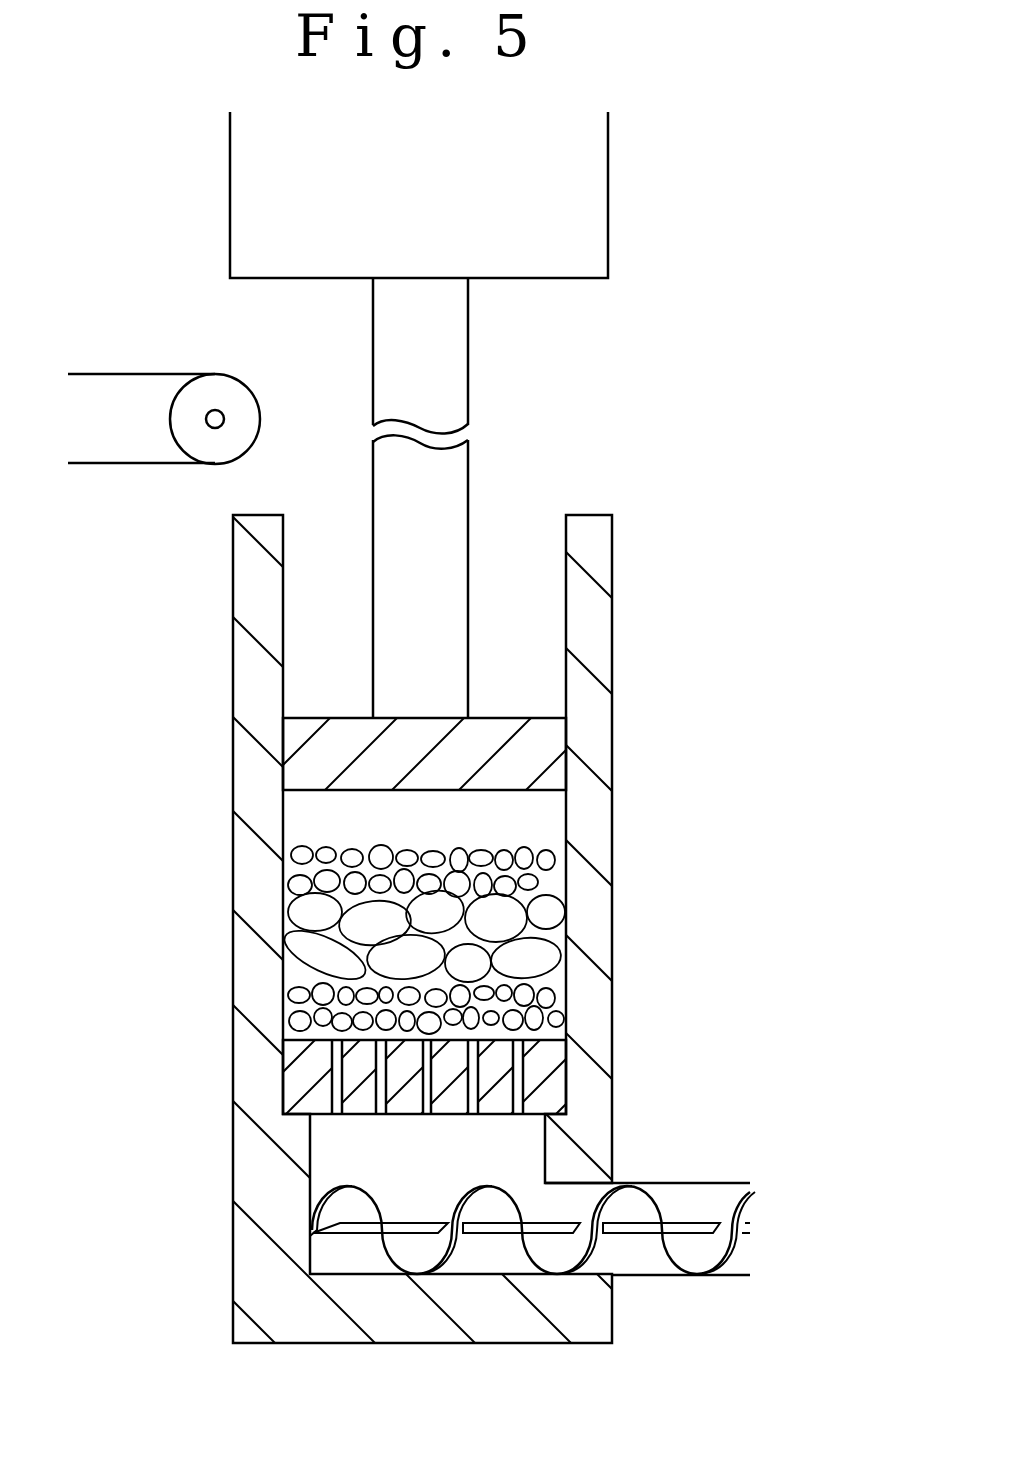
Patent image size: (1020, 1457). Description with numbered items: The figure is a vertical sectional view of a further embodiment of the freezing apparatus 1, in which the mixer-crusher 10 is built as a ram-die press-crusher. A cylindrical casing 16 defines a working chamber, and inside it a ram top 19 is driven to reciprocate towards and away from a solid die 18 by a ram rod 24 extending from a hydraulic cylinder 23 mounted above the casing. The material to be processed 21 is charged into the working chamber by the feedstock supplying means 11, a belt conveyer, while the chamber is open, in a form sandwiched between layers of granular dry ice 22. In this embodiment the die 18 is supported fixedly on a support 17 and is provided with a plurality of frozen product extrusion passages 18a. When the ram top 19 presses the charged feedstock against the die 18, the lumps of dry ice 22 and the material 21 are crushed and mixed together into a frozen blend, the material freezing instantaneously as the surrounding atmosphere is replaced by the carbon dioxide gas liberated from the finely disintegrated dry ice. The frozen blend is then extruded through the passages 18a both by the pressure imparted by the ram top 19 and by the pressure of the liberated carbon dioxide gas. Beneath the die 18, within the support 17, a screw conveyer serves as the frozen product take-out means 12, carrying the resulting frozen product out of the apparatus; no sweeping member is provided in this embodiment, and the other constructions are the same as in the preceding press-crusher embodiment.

The freezing apparatus 1 is at (762, 183).
The mixer-crusher 10 is at (606, 454).
The feedstock supplying means 11 is at (123, 372).
The frozen product take-out means 12 is at (698, 1180).
The cylindrical casing 16 is at (613, 671).
The support 17 is at (298, 1122).
The die 18 is at (410, 1067).
The frozen product extrusion passages 18a is at (335, 1085).
The ram top 19 is at (310, 763).
The material to be processed 21 is at (545, 906).
The granular dry ice 22 is at (295, 1013).
The hydraulic cylinder 23 is at (609, 165).
The ram rod 24 is at (460, 496).